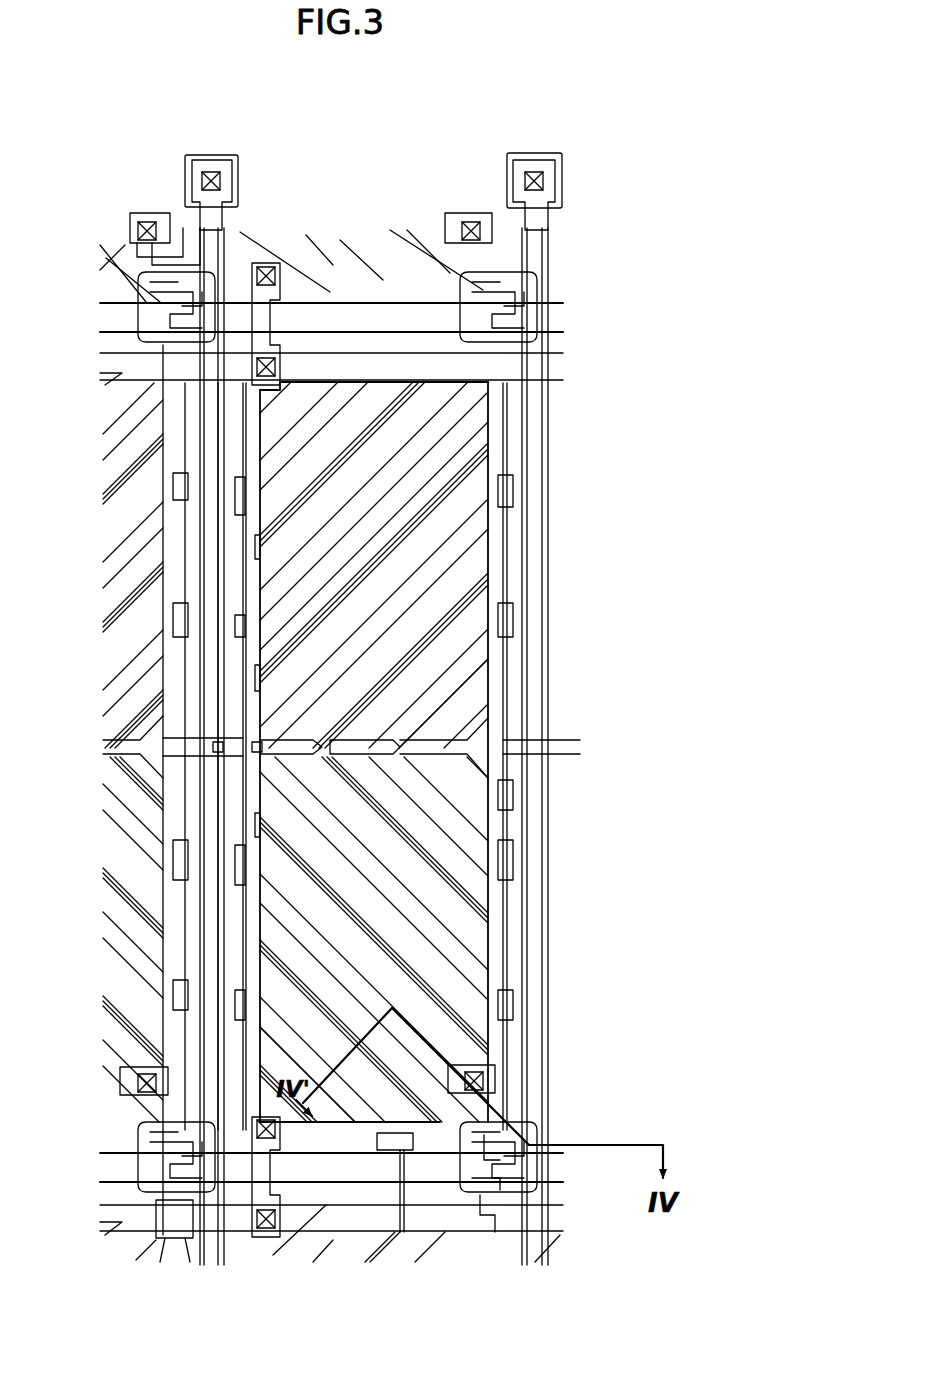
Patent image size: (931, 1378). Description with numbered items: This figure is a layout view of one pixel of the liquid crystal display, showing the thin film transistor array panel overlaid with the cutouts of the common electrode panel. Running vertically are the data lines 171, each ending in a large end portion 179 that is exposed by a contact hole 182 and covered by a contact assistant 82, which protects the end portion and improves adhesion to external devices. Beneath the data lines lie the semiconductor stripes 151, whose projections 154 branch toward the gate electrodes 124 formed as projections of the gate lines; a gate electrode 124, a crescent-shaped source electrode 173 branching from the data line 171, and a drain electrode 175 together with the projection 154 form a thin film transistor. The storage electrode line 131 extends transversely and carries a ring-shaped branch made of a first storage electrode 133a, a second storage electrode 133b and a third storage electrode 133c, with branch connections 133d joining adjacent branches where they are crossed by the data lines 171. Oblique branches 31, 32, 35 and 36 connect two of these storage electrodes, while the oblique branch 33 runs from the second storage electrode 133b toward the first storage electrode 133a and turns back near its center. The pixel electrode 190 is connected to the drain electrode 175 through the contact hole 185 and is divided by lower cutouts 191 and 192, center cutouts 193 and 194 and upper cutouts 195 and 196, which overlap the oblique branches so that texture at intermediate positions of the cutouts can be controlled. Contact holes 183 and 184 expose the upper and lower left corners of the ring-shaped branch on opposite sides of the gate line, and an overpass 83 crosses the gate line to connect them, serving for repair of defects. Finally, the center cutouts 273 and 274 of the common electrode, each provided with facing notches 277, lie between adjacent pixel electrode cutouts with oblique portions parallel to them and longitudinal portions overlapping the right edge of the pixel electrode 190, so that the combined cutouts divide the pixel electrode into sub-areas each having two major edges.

The contact assistant 82 is at (200, 155).
The end portion of data line 179 is at (220, 156).
The contact hole 182 is at (203, 181).
The storage electrode line 131 is at (283, 272).
The upper cutout 196 is at (428, 404).
The second storage electrode 133b is at (492, 433).
The center cutout of common electrode 273 is at (507, 490).
The oblique branch 35 is at (470, 490).
The upper cutout 195 is at (416, 541).
The semiconductor stripe 151 is at (170, 728).
The center cutout of common electrode 274 is at (507, 622).
The oblique branch 33 is at (445, 636).
The center cutout 194 is at (505, 706).
The branch connection 133d is at (520, 741).
The data line 171 is at (190, 782).
The notch 277 is at (508, 798).
The center cutout 193 is at (412, 823).
The lower cutout 192 is at (387, 926).
The oblique branch 32 is at (455, 985).
The lower cutout 191 is at (355, 1016).
The oblique branch 31 is at (445, 1020).
The contact hole 185 is at (483, 1085).
The drain electrode 175 is at (525, 1132).
The source electrode 173 is at (500, 1182).
The oblique branch 36 is at (300, 502).
The first storage electrode 133a is at (243, 553).
The contact hole 184 is at (175, 1072).
The contact hole 183 is at (266, 1232).
The overpass 83 is at (278, 1228).
The pixel electrode 190 is at (372, 1150).
The third storage electrode 133c is at (403, 1160).
The projection of semiconductor stripe 154 is at (472, 1140).
The gate electrode 124 is at (485, 1225).